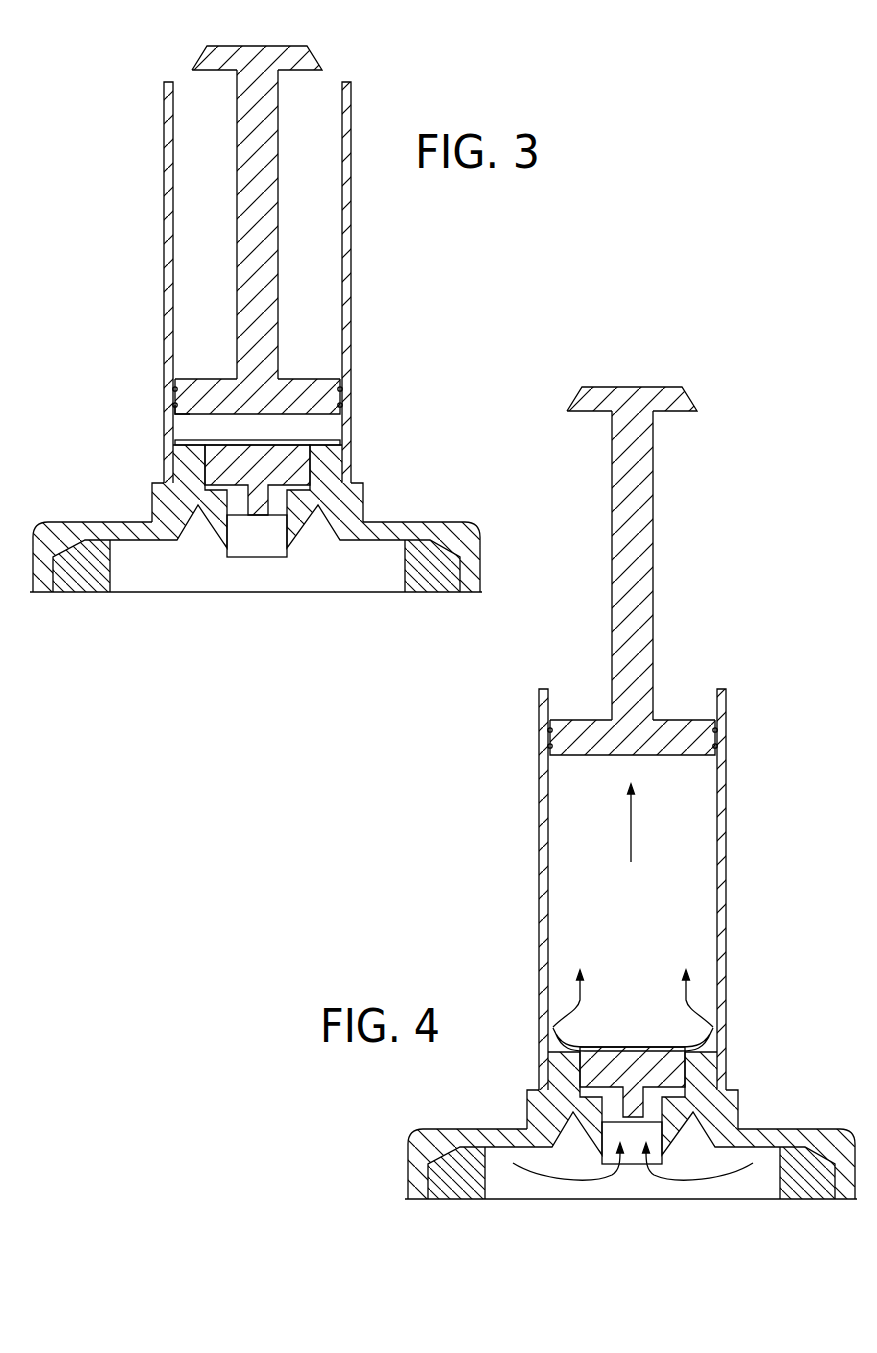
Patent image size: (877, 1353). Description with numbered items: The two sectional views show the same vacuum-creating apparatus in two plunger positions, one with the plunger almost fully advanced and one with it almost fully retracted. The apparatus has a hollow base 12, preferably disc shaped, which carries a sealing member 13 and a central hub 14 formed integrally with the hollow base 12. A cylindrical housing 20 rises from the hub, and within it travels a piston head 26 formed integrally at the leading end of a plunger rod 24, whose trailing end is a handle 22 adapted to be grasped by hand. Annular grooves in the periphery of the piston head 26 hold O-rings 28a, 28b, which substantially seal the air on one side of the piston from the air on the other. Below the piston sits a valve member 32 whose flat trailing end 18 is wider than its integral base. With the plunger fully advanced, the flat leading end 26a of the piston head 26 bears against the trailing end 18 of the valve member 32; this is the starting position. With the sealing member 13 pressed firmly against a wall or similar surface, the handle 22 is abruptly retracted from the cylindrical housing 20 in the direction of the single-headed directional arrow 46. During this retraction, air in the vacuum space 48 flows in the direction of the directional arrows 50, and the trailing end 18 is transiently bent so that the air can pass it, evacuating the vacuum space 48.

In FIG. 3, the hollow base 12 is at (76, 522).
In FIG. 4, the hollow base 12 is at (408, 1153).
In FIG. 3, the sealing member 13 is at (110, 574).
In FIG. 4, the sealing member 13 is at (455, 1198).
In FIG. 3, the central hub 14 is at (364, 502).
In FIG. 4, the central hub 14 is at (528, 1111).
In FIG. 3, the trailing end 18 is at (257, 442).
In FIG. 4, the trailing end 18 is at (697, 1035).
In FIG. 3, the cylindrical housing 20 is at (351, 192).
In FIG. 4, the cylindrical housing 20 is at (728, 766).
In FIG. 3, the handle 22 is at (278, 46).
In FIG. 4, the handle 22 is at (655, 388).
In FIG. 3, the plunger rod 24 is at (278, 172).
In FIG. 4, the plunger rod 24 is at (655, 505).
In FIG. 3, the piston head 26 is at (310, 379).
In FIG. 4, the piston head 26 is at (692, 720).
In FIG. 3, the flat leading end 26a is at (221, 418).
In FIG. 3, the O-ring 28a is at (343, 388).
In FIG. 3, the O-ring 28b is at (173, 403).
In FIG. 3, the valve member 32 is at (272, 519).
In FIG. 4, the valve member 32 is at (655, 1046).
In FIG. 4, the directional arrow 46 is at (628, 841).
In FIG. 3, the vacuum space 48 is at (208, 583).
In FIG. 4, the vacuum space 48 is at (585, 1175).
In FIG. 4, the directional arrows 50 is at (680, 1002).